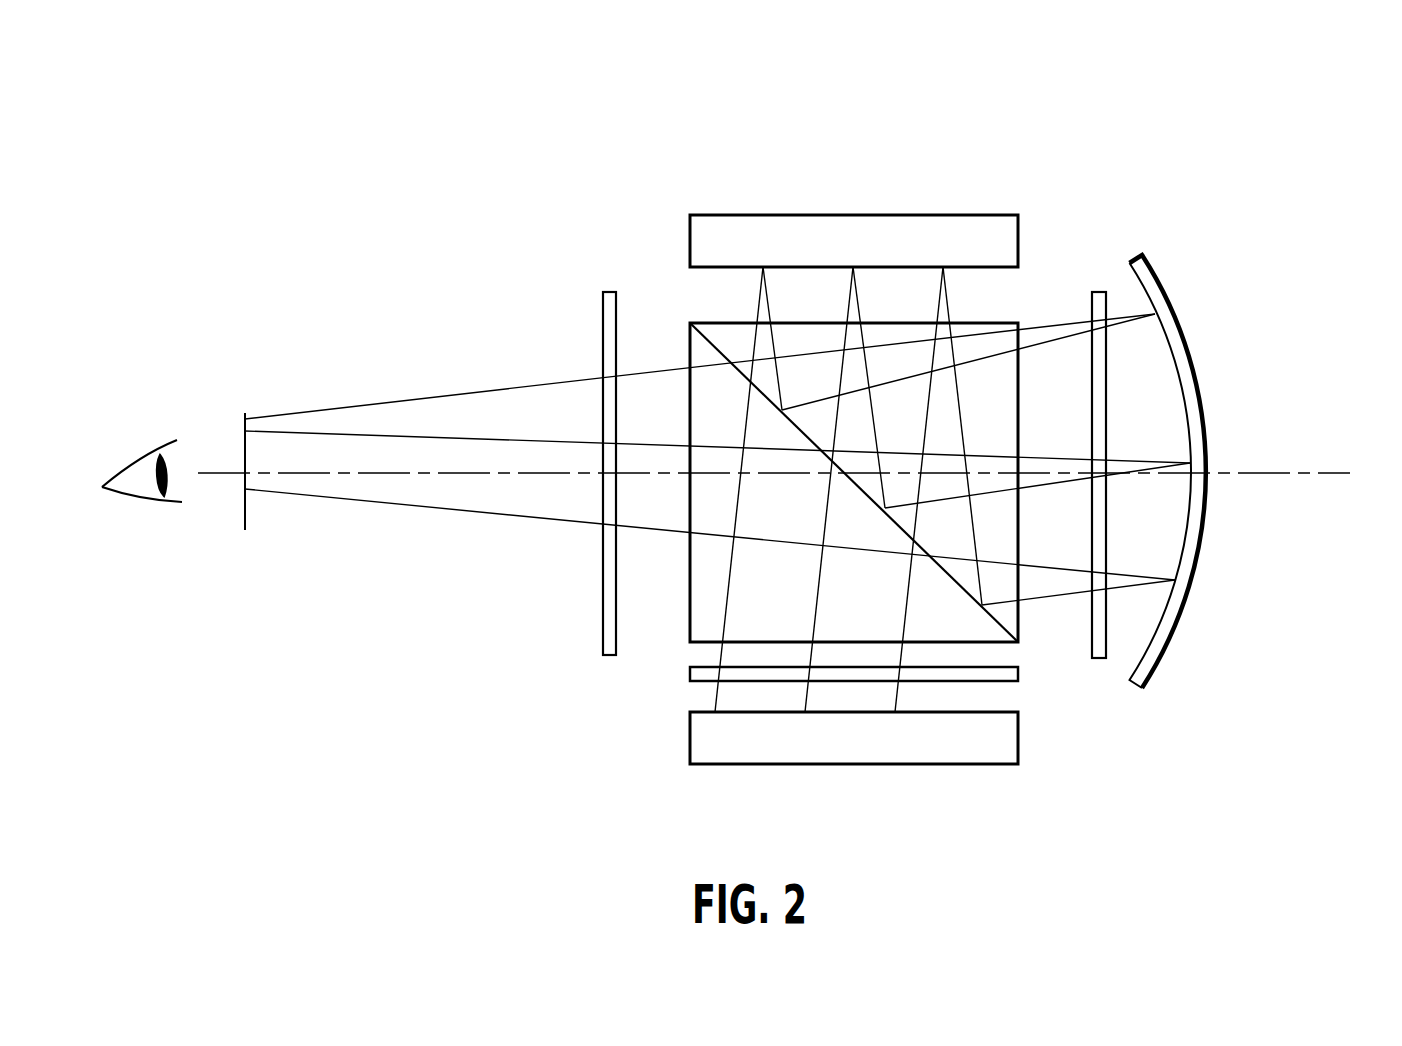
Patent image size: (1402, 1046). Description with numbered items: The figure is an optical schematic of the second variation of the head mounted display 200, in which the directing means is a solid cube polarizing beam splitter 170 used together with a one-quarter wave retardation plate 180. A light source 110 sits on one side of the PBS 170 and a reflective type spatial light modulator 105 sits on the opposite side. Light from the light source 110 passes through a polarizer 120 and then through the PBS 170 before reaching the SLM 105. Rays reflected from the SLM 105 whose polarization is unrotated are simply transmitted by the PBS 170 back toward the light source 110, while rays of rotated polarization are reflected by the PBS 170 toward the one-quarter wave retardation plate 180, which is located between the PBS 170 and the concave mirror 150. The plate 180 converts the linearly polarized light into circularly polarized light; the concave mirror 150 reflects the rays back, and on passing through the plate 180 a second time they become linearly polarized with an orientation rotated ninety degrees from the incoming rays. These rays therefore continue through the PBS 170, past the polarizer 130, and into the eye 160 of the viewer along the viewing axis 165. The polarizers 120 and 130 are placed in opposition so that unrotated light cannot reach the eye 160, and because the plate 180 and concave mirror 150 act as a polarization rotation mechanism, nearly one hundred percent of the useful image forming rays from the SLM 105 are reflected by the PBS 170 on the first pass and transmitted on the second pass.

The reflective type spatial light modulator 105 is at (836, 221).
The light source 110 is at (842, 750).
The polarizer 120 is at (690, 673).
The polarizer 130 is at (603, 656).
The concave mirror 150 is at (1188, 340).
The eye 160 is at (127, 440).
The viewing axis 165 is at (1332, 465).
The polarizing beam splitter 170 is at (675, 298).
The one-quarter wave retardation plate 180 is at (1097, 658).
The display optical system 200 is at (1190, 142).